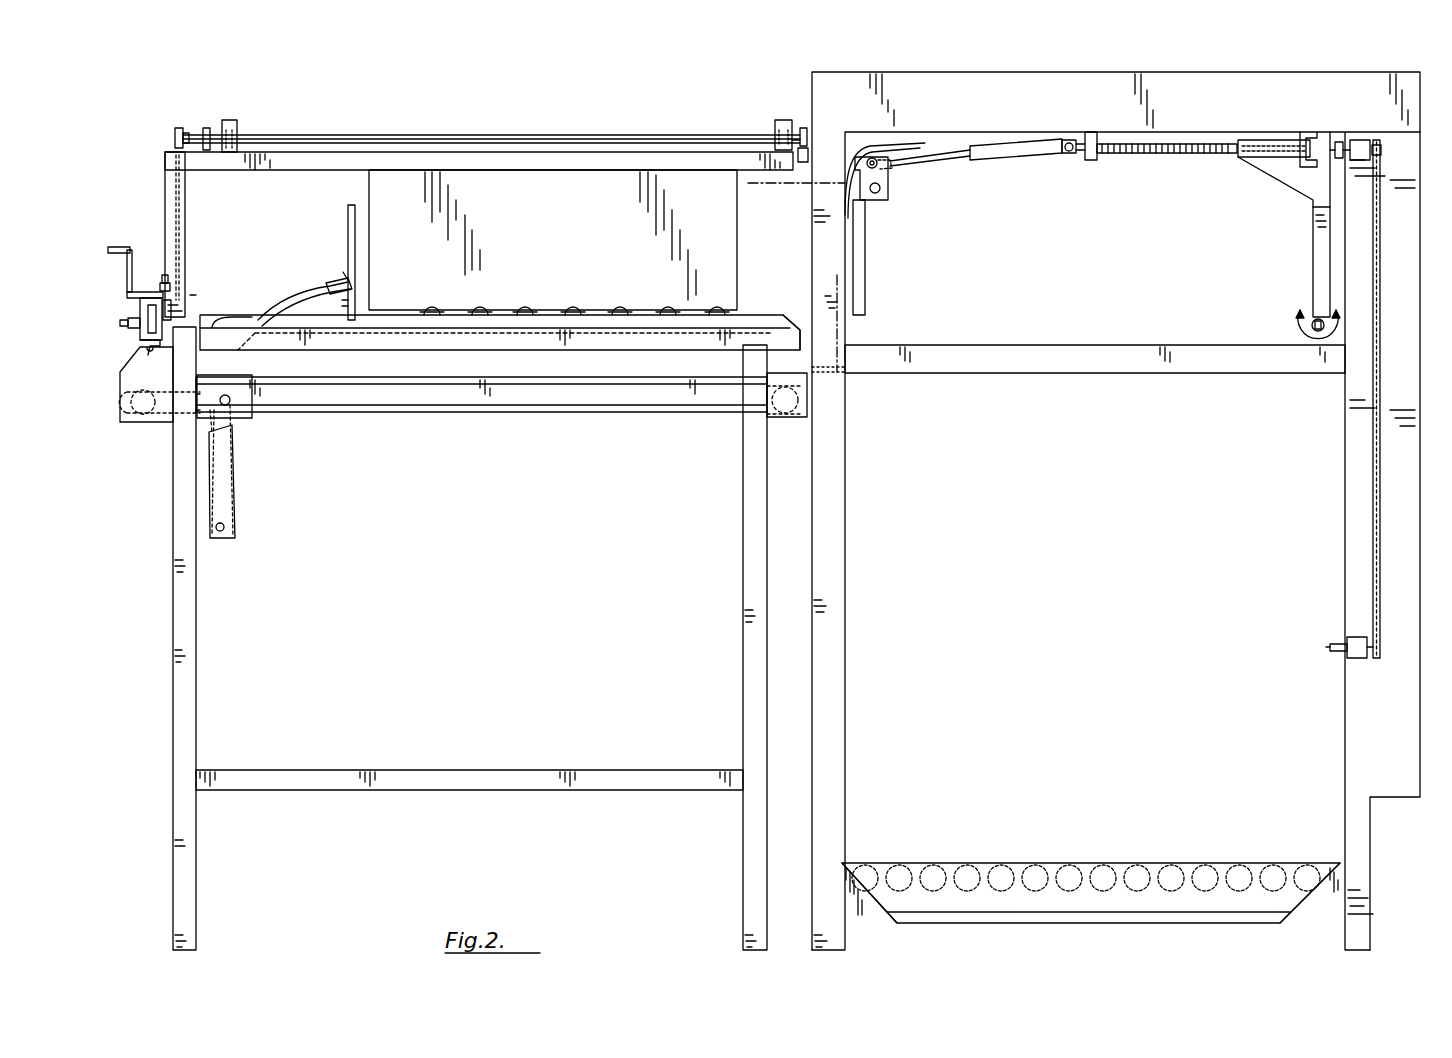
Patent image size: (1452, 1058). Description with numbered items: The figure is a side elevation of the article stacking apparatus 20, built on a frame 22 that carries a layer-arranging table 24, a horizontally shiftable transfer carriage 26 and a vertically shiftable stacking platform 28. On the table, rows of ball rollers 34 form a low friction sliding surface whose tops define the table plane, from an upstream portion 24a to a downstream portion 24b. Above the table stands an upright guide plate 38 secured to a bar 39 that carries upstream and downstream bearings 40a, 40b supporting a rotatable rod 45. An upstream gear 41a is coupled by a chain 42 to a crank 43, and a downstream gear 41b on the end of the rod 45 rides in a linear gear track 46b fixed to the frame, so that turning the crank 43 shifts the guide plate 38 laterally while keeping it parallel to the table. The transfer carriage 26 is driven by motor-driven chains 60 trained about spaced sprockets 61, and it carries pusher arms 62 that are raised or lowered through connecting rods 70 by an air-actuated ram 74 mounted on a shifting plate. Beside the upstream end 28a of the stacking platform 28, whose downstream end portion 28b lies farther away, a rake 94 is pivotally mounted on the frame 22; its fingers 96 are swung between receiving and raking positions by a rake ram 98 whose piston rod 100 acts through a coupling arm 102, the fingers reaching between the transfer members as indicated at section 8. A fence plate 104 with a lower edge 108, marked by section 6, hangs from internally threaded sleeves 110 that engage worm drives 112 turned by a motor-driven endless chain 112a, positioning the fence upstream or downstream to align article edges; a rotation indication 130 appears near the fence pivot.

The article stacking apparatus 20 is at (652, 470).
The frame 22 is at (812, 536).
The layer-arranging table 24 is at (553, 302).
The upstream portion of layer-arranging table 24a is at (384, 305).
The downstream portion of layer-arranging table 24b is at (758, 285).
The transfer carriage 26 is at (772, 302).
The stacking platform 28 is at (1086, 856).
The upstream end of stacking platform 28a is at (848, 858).
The downstream end portion of stacking platform 28b is at (1335, 858).
The ball rollers 34 is at (620, 313).
The guide plate 38 is at (560, 223).
The bar 39 is at (470, 143).
The upstream bearing 40a is at (237, 122).
The downstream bearing 40b is at (775, 125).
The upstream gear 41a is at (179, 128).
The downstream gear 41b is at (805, 128).
The chain 42 is at (185, 238).
The crank 43 is at (115, 247).
The rotatable rod 45 is at (364, 150).
The downstream linear gear track 46b is at (805, 176).
The motor-driven chains 60 is at (470, 382).
The sprockets 61 is at (143, 415).
The pusher arms 62 is at (348, 228).
The connecting rod 70 is at (290, 302).
The ram 74 is at (210, 455).
The section line 8- 8 is at (834, 290).
The section line 6- 6 is at (1319, 298).
The rake 94 is at (888, 196).
The tines or fingers 96 is at (868, 258).
The rake ram 98 is at (1034, 155).
The piston rod 100 is at (932, 158).
The coupling arm 102 is at (886, 170).
The fence plate 104 is at (1316, 248).
The lower edge of fence plate 108 is at (1311, 325).
The sleeves 110 is at (1265, 156).
The worm drives 112 is at (1172, 153).
The motor-driven endless chain 112a is at (1377, 410).
The rotation arc 130 is at (1318, 345).